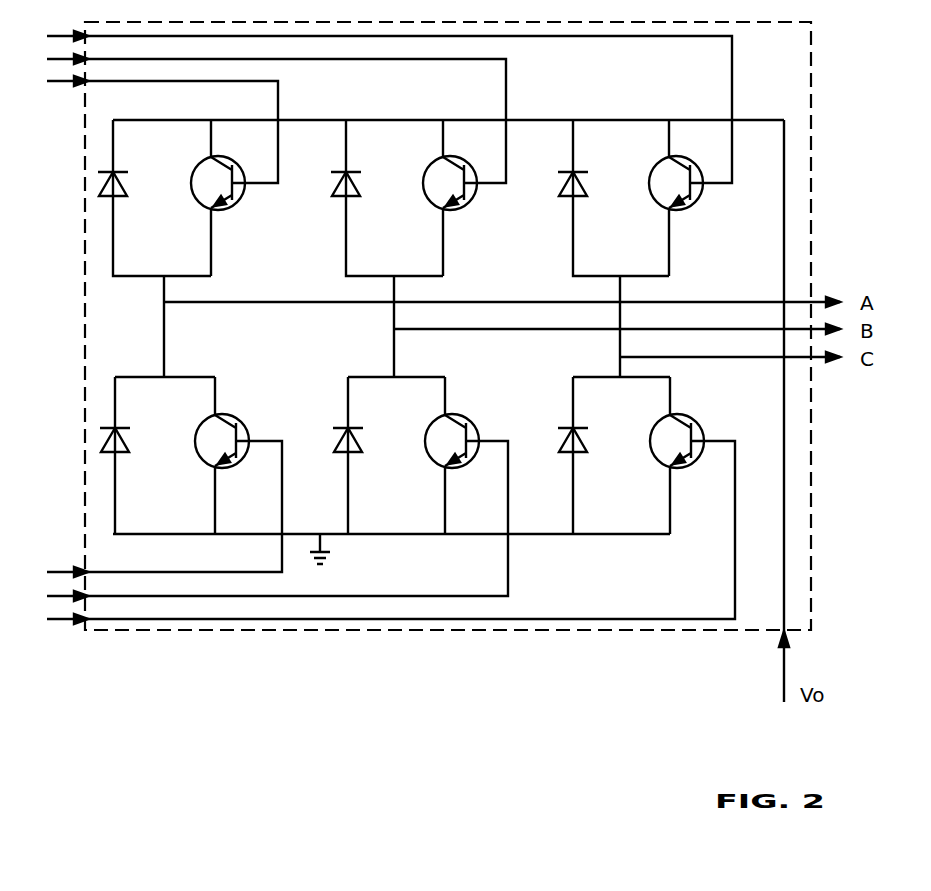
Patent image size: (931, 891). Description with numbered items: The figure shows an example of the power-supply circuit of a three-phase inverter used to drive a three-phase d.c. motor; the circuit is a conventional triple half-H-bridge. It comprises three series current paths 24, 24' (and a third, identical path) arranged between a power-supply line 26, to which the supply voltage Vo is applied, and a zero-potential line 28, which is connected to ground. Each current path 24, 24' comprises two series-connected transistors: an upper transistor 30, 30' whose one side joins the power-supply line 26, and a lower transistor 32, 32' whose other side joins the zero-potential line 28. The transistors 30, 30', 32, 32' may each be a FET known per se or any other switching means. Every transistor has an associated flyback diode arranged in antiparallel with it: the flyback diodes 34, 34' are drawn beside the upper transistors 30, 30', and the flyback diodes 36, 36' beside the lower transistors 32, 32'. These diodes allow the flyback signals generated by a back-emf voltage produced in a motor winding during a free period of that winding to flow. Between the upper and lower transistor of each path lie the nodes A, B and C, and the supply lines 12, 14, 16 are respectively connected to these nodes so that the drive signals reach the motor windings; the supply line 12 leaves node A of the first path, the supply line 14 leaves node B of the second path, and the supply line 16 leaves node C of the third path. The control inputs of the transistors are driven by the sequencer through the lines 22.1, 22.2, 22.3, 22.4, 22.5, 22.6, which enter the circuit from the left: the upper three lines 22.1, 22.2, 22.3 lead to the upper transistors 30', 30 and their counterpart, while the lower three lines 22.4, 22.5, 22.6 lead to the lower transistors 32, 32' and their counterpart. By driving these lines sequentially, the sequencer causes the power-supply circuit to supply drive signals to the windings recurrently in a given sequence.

The supply line 12 is at (257, 303).
The supply line 14 is at (483, 330).
The supply line 16 is at (678, 359).
The line 22.1 is at (733, 73).
The line 22.2 is at (508, 90).
The line 22.3 is at (280, 108).
The line 22.4 is at (165, 570).
The line 22.5 is at (510, 575).
The line 22.6 is at (620, 621).
The series current path 24 is at (164, 327).
The series current path 24' is at (395, 327).
The power-supply line 26 is at (412, 118).
The zero-potential line 28 is at (382, 537).
The transistor 30 is at (239, 203).
The transistor 30' is at (472, 203).
The transistor 32 is at (242, 427).
The transistor 32' is at (476, 427).
The flyback diode 34 is at (136, 204).
The flyback diode 34' is at (371, 204).
The flyback diode 36 is at (140, 446).
The flyback diode 36' is at (375, 446).